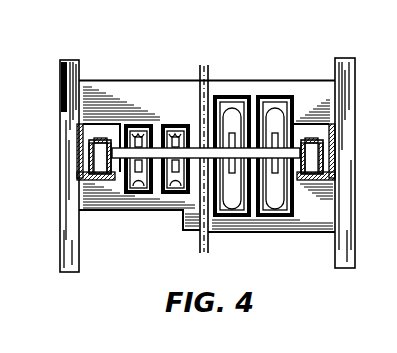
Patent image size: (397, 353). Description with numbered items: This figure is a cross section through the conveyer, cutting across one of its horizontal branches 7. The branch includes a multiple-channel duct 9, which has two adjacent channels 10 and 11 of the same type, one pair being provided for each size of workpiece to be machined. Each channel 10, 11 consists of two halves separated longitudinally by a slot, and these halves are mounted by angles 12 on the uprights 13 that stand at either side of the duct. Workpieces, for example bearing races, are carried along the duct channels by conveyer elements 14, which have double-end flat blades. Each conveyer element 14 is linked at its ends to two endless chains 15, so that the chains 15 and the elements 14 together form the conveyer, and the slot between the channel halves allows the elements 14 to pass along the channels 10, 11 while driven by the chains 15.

The horizontal branch 7 is at (2, 263).
The multiple-channel duct 9 is at (246, 91).
The channel 10 is at (172, 118).
The channel 11 is at (222, 97).
The angle 12 is at (332, 124).
The upright 13 is at (68, 123).
The conveyer element 14 is at (197, 118).
The endless chain 15 is at (97, 166).